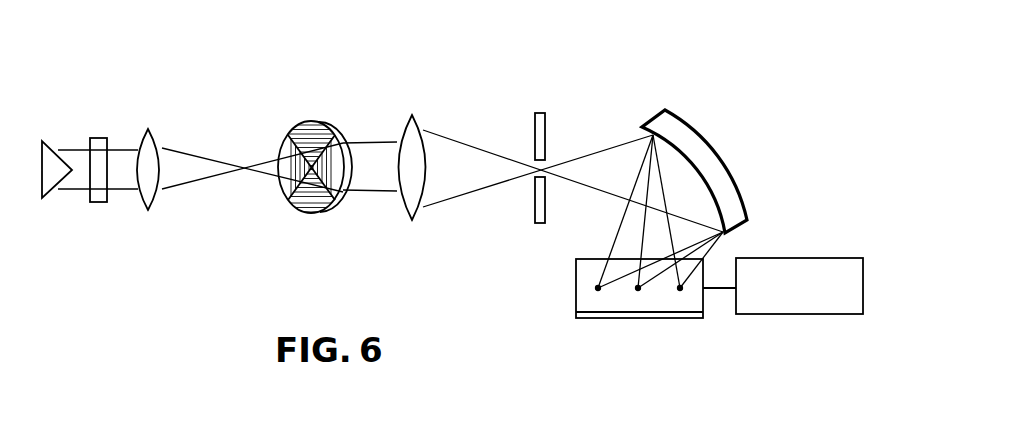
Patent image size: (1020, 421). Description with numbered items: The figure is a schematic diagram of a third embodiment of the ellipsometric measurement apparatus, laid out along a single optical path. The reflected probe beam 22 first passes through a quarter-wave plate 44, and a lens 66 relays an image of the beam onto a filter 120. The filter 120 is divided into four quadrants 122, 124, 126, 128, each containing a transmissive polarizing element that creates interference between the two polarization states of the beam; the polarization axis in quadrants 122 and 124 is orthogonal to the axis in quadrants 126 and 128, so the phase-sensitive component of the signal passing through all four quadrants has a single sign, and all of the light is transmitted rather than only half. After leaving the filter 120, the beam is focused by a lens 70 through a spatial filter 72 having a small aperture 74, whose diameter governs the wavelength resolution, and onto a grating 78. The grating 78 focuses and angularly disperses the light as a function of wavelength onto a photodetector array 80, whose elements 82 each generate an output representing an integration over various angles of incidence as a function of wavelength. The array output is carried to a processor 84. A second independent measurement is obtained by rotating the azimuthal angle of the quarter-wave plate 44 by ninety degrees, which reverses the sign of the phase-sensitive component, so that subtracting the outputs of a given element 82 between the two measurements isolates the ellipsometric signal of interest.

The reflected probe beam 22 is at (73, 190).
The quarter-wave plate 44 is at (98, 138).
The lens 66 is at (150, 130).
The filter 120 is at (285, 117).
The quadrant 122 is at (313, 133).
The quadrant 124 is at (313, 200).
The quadrant 126 is at (343, 187).
The quadrant 128 is at (275, 185).
The lens 70 is at (420, 120).
The spatial filter 72 is at (542, 133).
The aperture 74 is at (538, 178).
The grating 78 is at (700, 133).
The photodetector array 80 is at (700, 302).
The elements 82 is at (637, 291).
The processor 84 is at (820, 258).